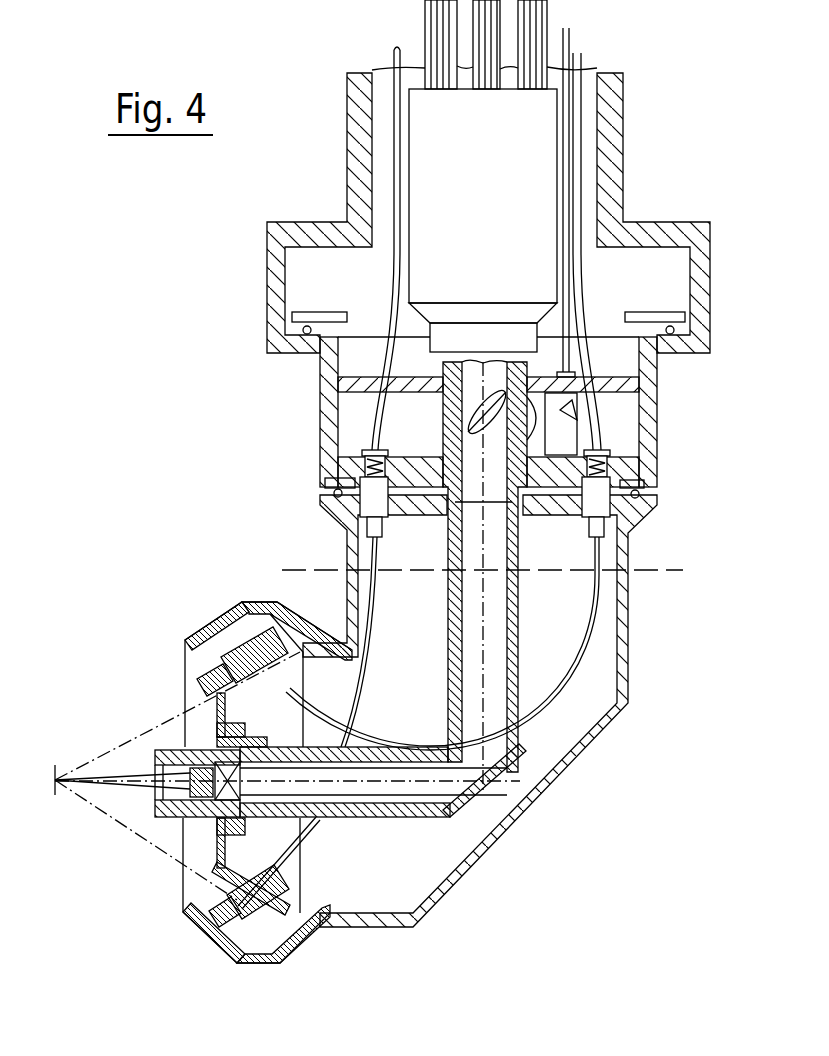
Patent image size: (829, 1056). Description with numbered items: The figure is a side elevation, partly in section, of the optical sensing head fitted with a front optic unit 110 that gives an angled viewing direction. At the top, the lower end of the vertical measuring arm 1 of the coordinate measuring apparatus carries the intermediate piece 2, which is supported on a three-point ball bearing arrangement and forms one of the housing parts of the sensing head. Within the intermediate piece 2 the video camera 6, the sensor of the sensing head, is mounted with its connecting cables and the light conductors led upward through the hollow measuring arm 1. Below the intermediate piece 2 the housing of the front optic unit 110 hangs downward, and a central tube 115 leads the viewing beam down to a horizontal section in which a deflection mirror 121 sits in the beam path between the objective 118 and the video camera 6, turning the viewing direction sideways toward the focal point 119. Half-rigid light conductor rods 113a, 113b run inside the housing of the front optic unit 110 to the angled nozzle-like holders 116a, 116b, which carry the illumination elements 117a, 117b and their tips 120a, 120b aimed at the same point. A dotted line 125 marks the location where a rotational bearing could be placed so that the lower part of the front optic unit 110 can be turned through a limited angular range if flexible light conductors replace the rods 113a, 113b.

The measuring arm 1 is at (648, 226).
The intermediate piece 2 is at (652, 405).
The video camera 6 is at (497, 196).
The front optic unit 110 is at (627, 652).
The light conductor rod 113a is at (570, 663).
The light conductor rod 113b is at (375, 637).
The central tube 115 is at (455, 692).
The nozzle holder 116a is at (268, 930).
The nozzle holder 116b is at (222, 621).
The nozzle 117a is at (203, 890).
The nozzle 117b is at (187, 668).
The objective 118 is at (150, 818).
The focal point 119 is at (55, 795).
The nozzle tip 120a is at (300, 898).
The nozzle tip 120b is at (222, 705).
The deflection mirror 121 is at (453, 820).
The dotted line 125 is at (652, 573).